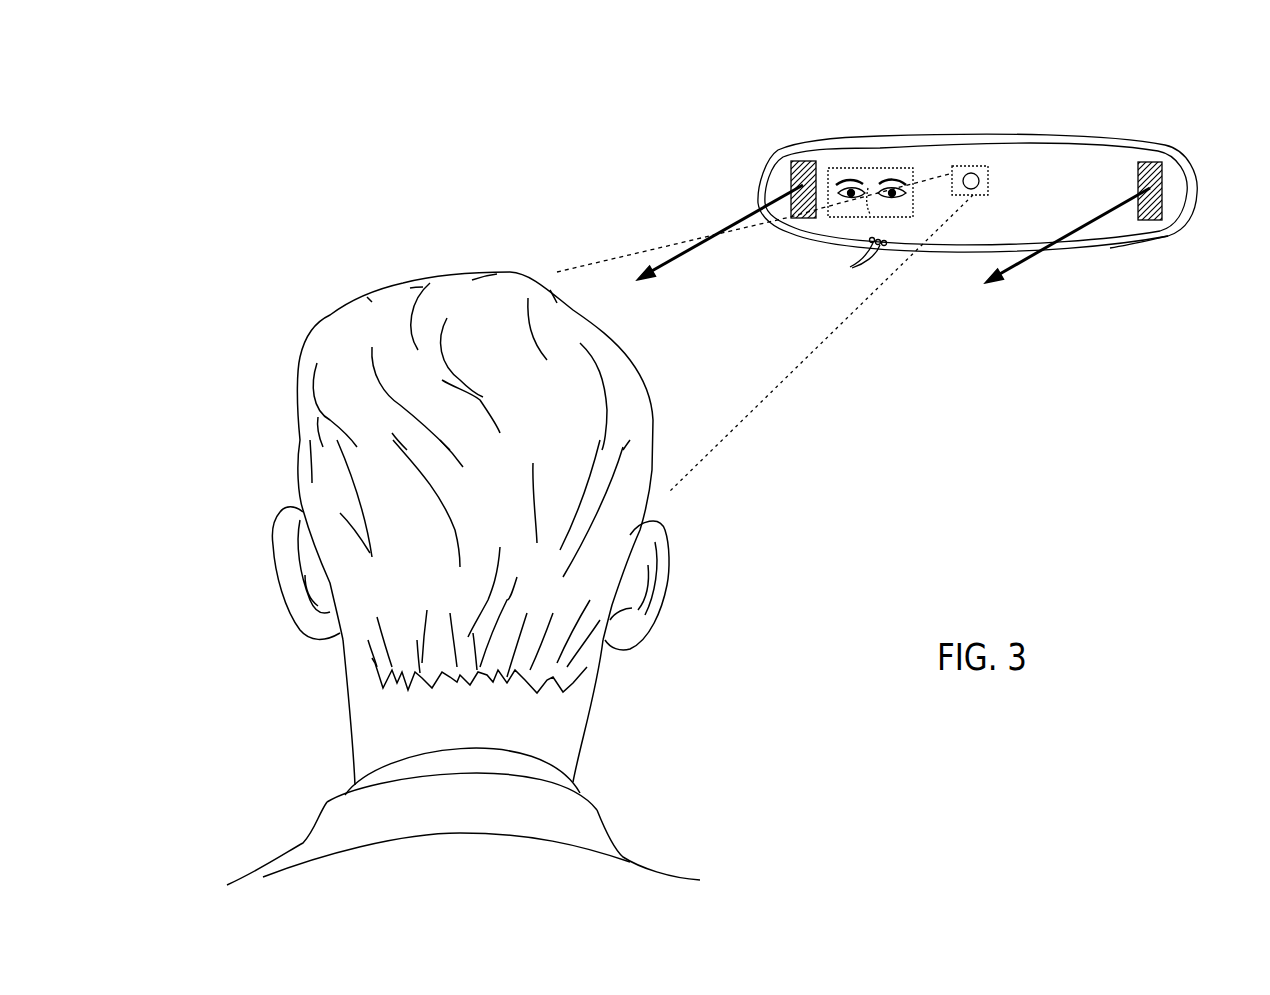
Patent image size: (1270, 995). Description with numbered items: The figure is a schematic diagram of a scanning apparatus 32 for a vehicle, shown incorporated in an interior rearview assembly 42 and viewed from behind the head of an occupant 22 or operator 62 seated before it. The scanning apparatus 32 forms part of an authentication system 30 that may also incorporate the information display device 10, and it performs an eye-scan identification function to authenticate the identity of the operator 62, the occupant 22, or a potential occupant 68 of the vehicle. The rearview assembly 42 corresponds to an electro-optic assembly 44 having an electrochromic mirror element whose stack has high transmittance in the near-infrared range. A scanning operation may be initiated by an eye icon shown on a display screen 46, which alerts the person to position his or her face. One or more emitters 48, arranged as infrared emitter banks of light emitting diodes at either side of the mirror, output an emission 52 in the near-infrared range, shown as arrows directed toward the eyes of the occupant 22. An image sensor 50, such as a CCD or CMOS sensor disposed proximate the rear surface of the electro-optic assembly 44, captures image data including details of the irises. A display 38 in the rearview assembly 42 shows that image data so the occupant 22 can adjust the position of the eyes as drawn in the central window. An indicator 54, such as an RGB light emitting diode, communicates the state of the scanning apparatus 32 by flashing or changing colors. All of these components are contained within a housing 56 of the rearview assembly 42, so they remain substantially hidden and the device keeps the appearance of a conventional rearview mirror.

The information display device 10 is at (963, 161).
The authentication system 30 is at (963, 161).
The occupant 22 is at (463, 548).
The operator 62 is at (463, 548).
The potential occupant 68 is at (400, 297).
The scanning apparatus 32 is at (980, 169).
The interior rearview assembly 42 is at (1128, 138).
The display 38 is at (963, 148).
The electro-optic assembly 44 is at (883, 147).
The display screen 46 is at (862, 177).
The emitters 48 is at (795, 180).
The image sensor 50 is at (973, 173).
The emission 52 is at (683, 250).
The indicator 54 is at (852, 268).
The housing 56 is at (1138, 238).